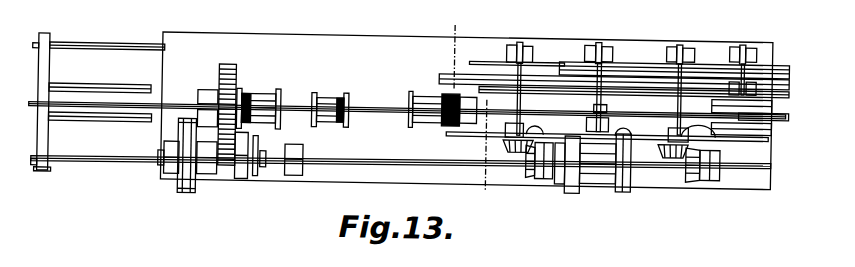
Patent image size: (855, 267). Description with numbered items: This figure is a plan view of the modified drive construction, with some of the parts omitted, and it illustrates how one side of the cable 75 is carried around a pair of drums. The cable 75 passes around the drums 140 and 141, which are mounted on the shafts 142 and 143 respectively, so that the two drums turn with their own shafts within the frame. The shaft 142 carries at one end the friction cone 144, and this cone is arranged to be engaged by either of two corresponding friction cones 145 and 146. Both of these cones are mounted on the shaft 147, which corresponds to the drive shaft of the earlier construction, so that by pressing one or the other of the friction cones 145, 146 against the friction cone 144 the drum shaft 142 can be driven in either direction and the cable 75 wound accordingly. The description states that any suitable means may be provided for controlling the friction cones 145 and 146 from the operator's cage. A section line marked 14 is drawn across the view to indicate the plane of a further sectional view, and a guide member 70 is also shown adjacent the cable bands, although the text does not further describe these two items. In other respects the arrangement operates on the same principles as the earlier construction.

The section line 14- 14 is at (464, 113).
The guide band 70 is at (479, 83).
The cable 75 is at (478, 56).
The drum 140 is at (570, 55).
The drum 141 is at (762, 52).
The shaft 142 is at (600, 35).
The shaft 143 is at (742, 22).
The friction cone 144 is at (666, 137).
The friction cone 145 is at (566, 174).
The friction cone 146 is at (633, 182).
The shaft 147 is at (392, 146).